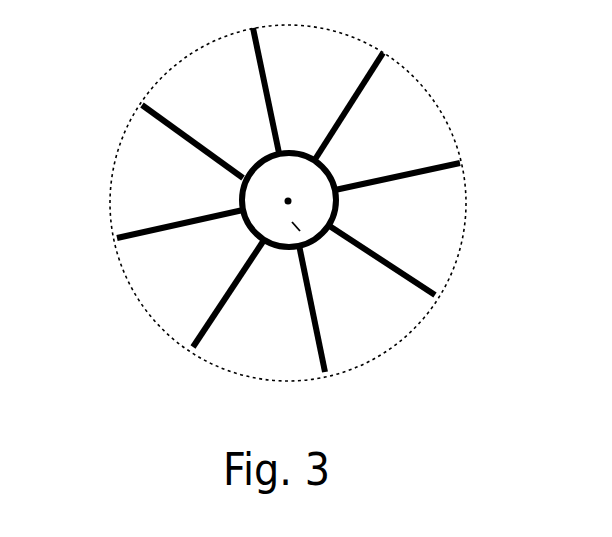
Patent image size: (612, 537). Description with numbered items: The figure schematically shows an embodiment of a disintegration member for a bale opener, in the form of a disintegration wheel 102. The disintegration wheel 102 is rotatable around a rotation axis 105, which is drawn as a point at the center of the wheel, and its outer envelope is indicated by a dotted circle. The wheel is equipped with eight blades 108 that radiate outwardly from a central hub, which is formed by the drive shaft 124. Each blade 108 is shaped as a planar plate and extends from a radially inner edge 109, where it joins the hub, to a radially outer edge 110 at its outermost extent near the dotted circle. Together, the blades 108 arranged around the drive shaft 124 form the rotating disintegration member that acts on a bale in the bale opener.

The disintegration wheel 102 is at (370, 132).
The rotation axis 105 is at (288, 201).
The blade 108 is at (390, 263).
The radially inner edge 109 is at (242, 225).
The radially outer edge 110 is at (117, 238).
The drive shaft 124 is at (292, 222).